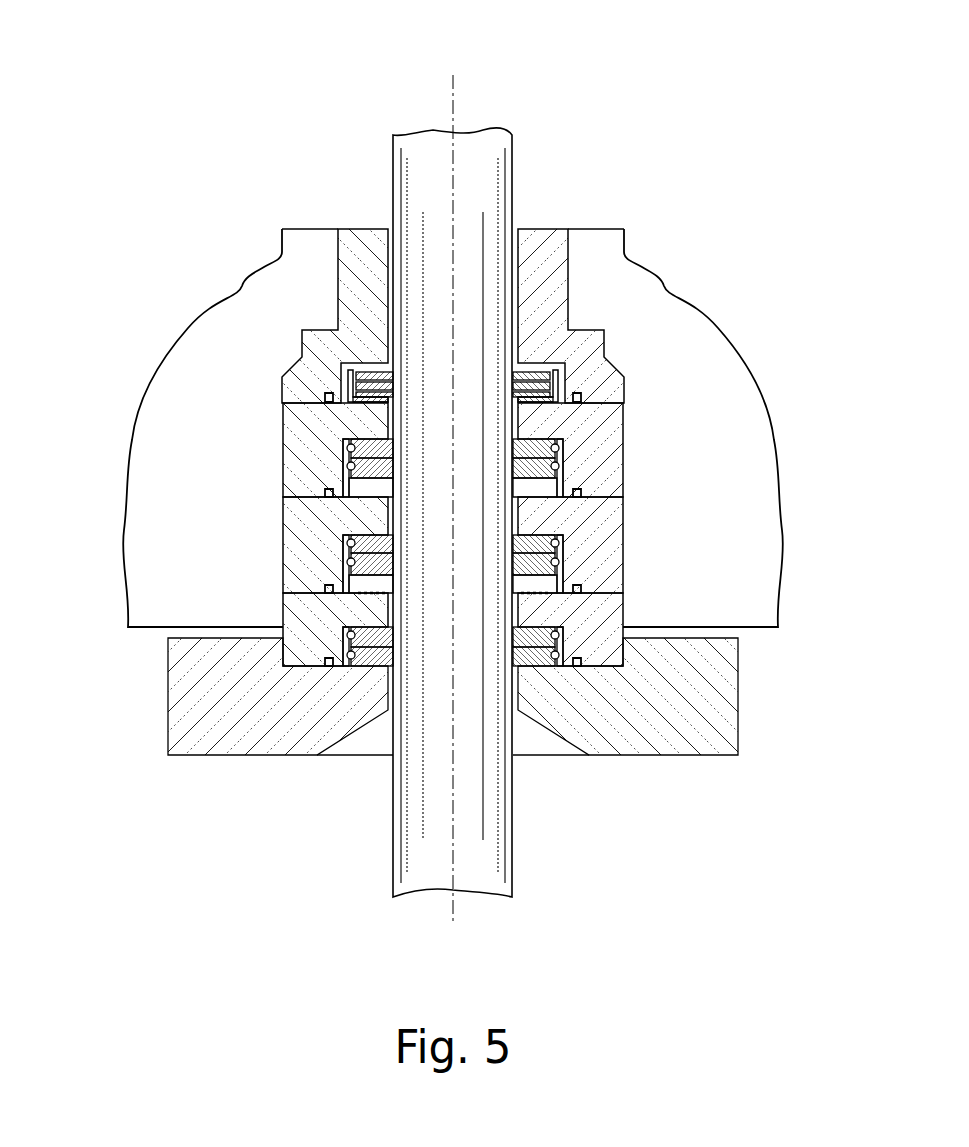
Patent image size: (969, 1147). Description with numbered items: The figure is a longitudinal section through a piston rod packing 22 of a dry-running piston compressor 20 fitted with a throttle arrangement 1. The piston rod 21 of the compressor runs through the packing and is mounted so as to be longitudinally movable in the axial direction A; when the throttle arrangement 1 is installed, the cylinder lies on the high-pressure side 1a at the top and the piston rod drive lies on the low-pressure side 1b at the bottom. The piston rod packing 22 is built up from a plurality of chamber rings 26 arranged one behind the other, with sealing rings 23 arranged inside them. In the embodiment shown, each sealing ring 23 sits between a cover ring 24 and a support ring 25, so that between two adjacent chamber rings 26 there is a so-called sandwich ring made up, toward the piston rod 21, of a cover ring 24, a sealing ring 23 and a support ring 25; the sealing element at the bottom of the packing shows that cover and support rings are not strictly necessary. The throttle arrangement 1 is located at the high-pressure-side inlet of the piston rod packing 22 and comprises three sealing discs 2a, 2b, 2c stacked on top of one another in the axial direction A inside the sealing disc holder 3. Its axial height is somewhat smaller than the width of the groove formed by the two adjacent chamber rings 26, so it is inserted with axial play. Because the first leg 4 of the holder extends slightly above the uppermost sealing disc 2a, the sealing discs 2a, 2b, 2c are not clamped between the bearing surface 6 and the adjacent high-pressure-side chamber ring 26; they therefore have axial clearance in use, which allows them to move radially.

The throttle arrangement 1 is at (82, 220).
The high-pressure side 1a is at (470, 55).
The low-pressure side 1b is at (442, 997).
The axial direction A is at (453, 628).
The sealing disc 2a is at (356, 376).
The sealing disc 2b is at (356, 386).
The sealing disc 2c is at (350, 396).
The sealing disc holder 3 is at (343, 400).
The first leg 4 is at (323, 278).
The bearing surface 6 is at (352, 404).
The dry-running piston compressor 20 is at (178, 98).
The piston rod 21 is at (423, 793).
The piston rod packing 22 is at (560, 228).
The sealing ring 23 is at (560, 477).
The cover ring 24 is at (565, 455).
The support ring 25 is at (550, 482).
The chamber ring 26 is at (545, 267).